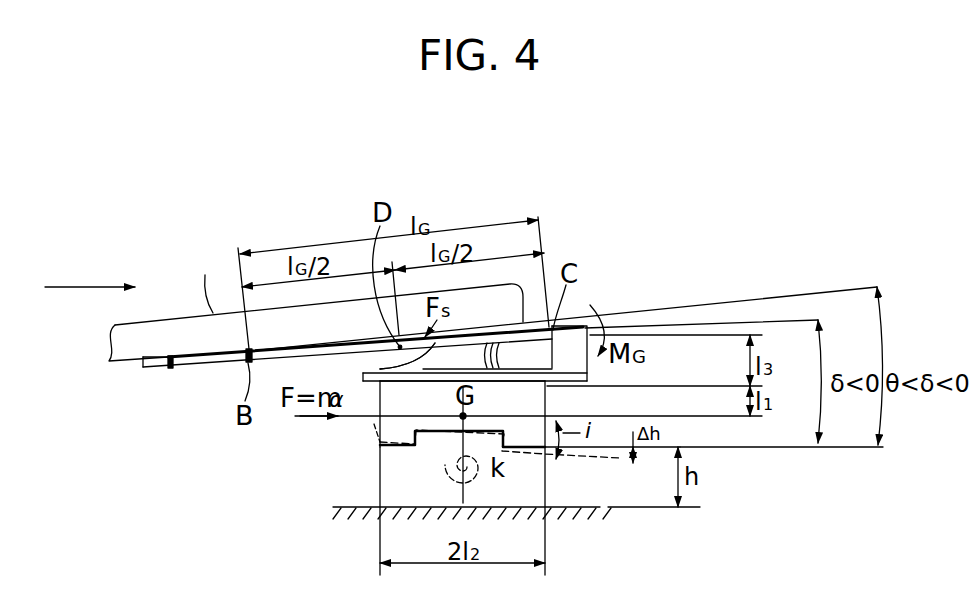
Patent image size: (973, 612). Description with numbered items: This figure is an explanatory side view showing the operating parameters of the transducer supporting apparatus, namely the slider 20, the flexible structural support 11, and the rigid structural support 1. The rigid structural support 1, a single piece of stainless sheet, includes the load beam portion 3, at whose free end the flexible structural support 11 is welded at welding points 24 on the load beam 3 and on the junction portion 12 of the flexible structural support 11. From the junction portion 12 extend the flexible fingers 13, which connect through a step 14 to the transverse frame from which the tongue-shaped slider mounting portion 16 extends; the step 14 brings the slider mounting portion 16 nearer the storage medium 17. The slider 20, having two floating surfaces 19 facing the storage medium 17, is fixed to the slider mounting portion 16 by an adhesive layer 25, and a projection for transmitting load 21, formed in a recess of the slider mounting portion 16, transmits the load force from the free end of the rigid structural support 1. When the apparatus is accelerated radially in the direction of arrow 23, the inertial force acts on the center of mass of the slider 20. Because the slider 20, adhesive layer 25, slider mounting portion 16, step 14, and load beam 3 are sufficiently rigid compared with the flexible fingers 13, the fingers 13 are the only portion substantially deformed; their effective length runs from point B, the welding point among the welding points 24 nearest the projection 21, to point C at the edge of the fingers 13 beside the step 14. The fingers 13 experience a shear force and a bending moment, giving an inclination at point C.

The rigid structural support 1 is at (208, 282).
The load beam portion 3 is at (172, 335).
The flexible structural support 11 is at (574, 318).
The junction portion 12 is at (213, 364).
The flexible fingers 13 is at (352, 350).
The step 14 is at (577, 368).
The slider mounting portion 16 is at (520, 376).
The storage medium 17 is at (590, 503).
The floating surfaces 19 is at (400, 448).
The slider 20 is at (380, 432).
The projection for transmitting load 21 is at (423, 373).
The arrow 23 is at (62, 287).
The welding points 24 is at (171, 369).
The adhesive layer 25 is at (405, 388).